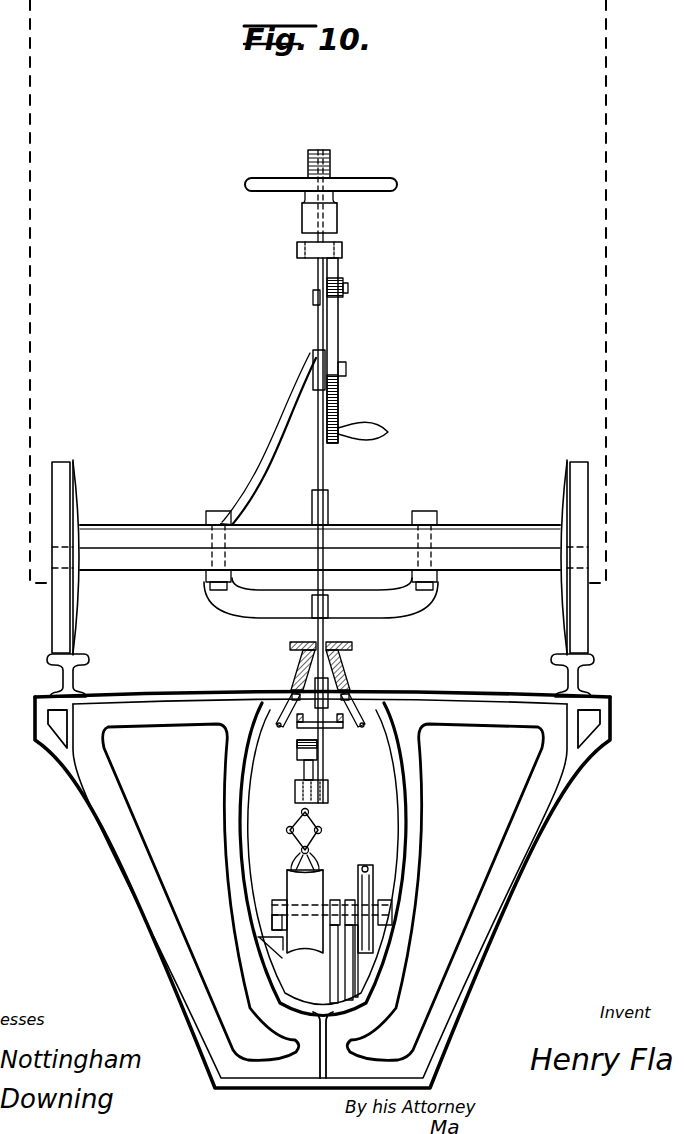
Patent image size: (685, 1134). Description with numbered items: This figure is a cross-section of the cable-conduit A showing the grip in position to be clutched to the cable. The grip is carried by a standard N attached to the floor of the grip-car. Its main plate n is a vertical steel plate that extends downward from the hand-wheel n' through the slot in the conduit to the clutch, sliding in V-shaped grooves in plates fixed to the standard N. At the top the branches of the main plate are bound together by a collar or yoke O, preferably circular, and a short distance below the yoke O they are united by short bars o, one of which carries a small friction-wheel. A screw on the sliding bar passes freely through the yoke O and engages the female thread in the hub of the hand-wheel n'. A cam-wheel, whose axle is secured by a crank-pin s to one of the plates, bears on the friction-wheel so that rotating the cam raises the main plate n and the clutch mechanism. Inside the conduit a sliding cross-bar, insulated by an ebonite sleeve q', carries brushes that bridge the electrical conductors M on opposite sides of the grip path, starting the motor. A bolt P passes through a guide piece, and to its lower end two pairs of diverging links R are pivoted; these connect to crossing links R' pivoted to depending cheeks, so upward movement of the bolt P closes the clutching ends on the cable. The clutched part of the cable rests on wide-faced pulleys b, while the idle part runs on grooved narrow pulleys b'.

The cable-conduit A is at (322, 890).
The main plate n is at (329, 476).
The hand-wheel n' is at (321, 176).
The collar or yoke O is at (310, 221).
The rack plate S' is at (357, 350).
The short bars o is at (341, 284).
The crank-pin s is at (347, 368).
The standard N is at (268, 439).
The electrical conductors M is at (292, 703).
The ebonite sleeve q' is at (324, 733).
The bolt P is at (296, 810).
The diverging links R is at (314, 830).
The links R' is at (281, 841).
The wide-faced pulleys b is at (290, 914).
The grooved-faced narrow pulleys b' is at (332, 932).